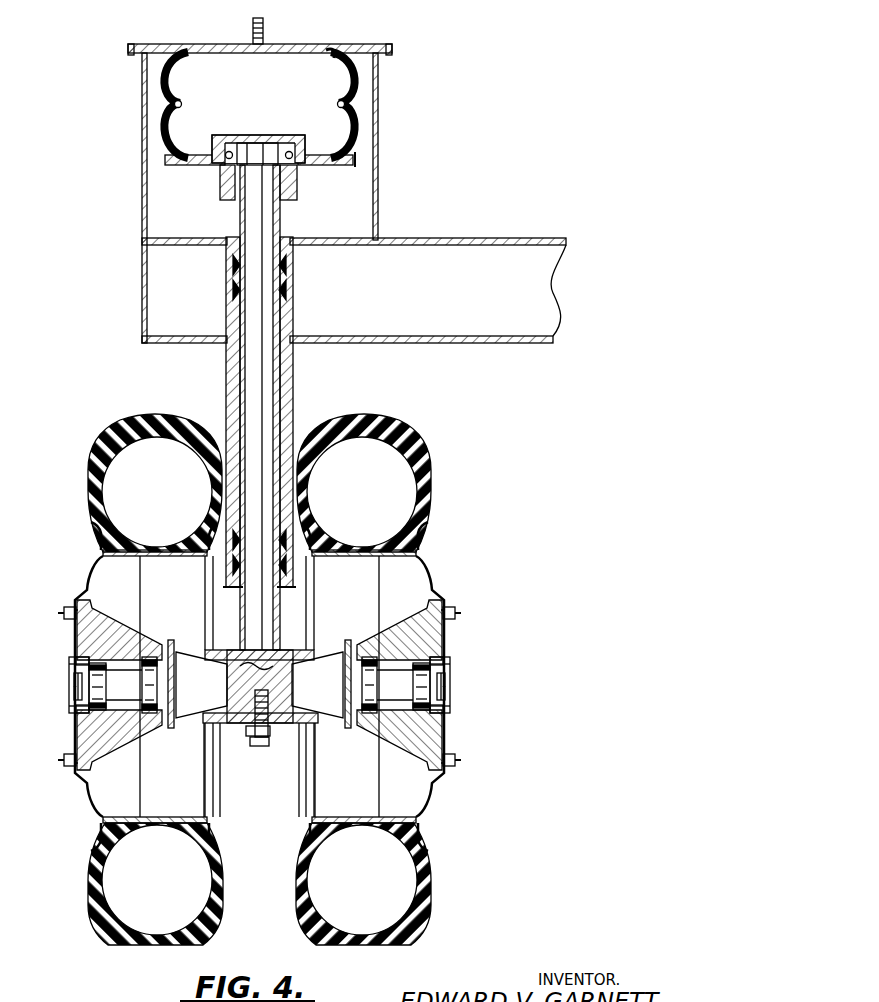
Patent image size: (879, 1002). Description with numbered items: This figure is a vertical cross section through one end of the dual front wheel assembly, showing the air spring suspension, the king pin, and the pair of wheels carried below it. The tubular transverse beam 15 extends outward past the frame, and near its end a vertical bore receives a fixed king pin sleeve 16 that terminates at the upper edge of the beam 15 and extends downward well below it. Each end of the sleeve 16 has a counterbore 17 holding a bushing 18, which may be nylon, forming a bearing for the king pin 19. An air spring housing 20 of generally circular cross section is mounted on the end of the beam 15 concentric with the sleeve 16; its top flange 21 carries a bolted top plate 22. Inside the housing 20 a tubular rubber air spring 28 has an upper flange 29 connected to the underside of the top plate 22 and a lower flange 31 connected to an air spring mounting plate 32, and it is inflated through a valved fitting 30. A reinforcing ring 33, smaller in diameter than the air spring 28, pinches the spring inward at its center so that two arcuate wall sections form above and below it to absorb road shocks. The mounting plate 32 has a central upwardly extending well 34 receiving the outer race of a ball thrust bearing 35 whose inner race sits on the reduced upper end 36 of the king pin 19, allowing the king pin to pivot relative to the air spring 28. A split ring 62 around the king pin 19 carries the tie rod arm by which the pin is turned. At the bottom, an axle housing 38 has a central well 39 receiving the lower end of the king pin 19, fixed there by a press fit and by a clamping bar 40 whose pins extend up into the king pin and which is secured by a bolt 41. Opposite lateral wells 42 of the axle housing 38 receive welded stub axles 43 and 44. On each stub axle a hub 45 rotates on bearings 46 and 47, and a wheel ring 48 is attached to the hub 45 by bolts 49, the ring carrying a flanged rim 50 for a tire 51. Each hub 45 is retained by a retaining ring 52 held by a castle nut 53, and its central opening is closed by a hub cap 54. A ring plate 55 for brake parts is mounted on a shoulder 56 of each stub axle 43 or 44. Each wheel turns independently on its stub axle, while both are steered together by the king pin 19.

The transverse beam 15 is at (470, 240).
The king pin sleeve 16 is at (292, 365).
The counterbore 17 is at (282, 230).
The bushing 18 is at (288, 280).
The king pin 19 is at (240, 372).
The air spring housing 20 is at (380, 132).
The top flange 21 is at (391, 56).
The top plate 22 is at (392, 47).
The air spring 28 is at (338, 73).
The upper flange 29 is at (328, 50).
The valved fitting 30 is at (263, 40).
The lower flange 31 is at (358, 152).
The air spring mounting plate 32 is at (190, 165).
The reinforcing ring 33 is at (172, 104).
The well 34 is at (262, 135).
The ball thrust bearing 35 is at (296, 160).
The reduced upper end 36 is at (260, 160).
The axle housing 38 is at (308, 735).
The central well 39 is at (221, 742).
The clamping bar 40 is at (272, 738).
The bolt 41 is at (252, 745).
The lateral well 42 is at (240, 652).
The stub axle 43 is at (208, 652).
The stub axle 44 is at (333, 640).
The hub 45 is at (125, 640).
The bearing 46 is at (100, 688).
The bearing 47 is at (152, 658).
The wheel ring 48 is at (85, 570).
The bolt 49 is at (64, 612).
The flanged rim 50 is at (92, 538).
The tire 51 is at (90, 462).
The retaining ring 52 is at (68, 670).
The castle nut 53 is at (72, 708).
The hub cap 54 is at (70, 688).
The ring plate 55 is at (172, 640).
The shoulder 56 is at (172, 698).
The split ring 62 is at (222, 192).